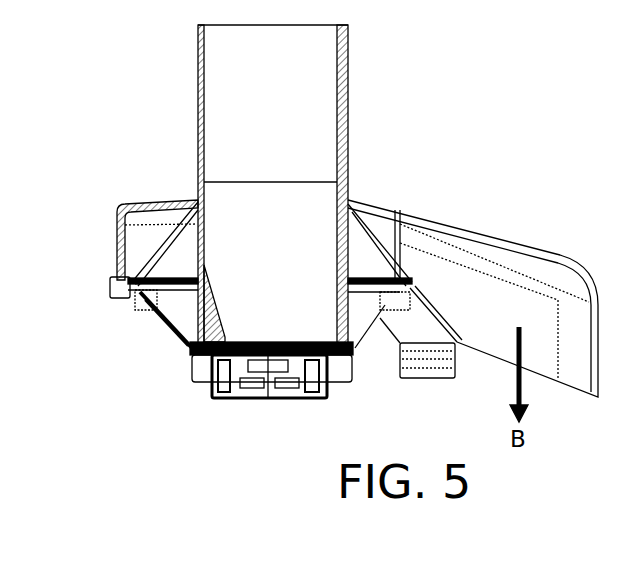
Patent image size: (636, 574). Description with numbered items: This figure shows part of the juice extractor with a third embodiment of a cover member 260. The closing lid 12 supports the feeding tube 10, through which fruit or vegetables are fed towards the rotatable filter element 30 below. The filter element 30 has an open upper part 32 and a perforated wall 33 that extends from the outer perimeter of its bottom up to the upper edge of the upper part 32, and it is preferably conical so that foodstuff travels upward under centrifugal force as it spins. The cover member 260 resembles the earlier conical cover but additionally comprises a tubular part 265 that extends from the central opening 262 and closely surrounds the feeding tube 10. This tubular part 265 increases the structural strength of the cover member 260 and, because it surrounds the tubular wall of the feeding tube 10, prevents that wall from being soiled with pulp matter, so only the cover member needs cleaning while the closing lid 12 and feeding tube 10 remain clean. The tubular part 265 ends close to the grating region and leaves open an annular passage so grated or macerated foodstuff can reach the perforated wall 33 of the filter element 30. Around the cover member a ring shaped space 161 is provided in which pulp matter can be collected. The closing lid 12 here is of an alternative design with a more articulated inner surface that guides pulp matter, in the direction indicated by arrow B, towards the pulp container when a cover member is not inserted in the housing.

The feeding tube 10 is at (350, 62).
The closing lid 12 is at (472, 220).
The filter element 30 is at (364, 312).
The open upper part 32 is at (275, 340).
The perforated wall 33 is at (177, 338).
The ring shaped space 161 is at (168, 256).
The cover member 260 is at (157, 243).
The central opening 262 is at (322, 197).
The tubular part 265 is at (190, 316).